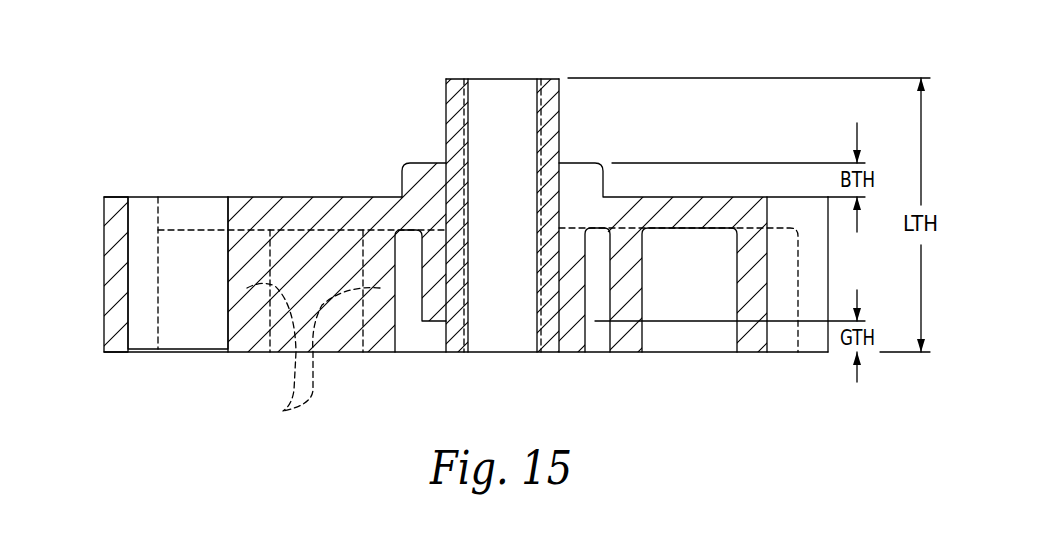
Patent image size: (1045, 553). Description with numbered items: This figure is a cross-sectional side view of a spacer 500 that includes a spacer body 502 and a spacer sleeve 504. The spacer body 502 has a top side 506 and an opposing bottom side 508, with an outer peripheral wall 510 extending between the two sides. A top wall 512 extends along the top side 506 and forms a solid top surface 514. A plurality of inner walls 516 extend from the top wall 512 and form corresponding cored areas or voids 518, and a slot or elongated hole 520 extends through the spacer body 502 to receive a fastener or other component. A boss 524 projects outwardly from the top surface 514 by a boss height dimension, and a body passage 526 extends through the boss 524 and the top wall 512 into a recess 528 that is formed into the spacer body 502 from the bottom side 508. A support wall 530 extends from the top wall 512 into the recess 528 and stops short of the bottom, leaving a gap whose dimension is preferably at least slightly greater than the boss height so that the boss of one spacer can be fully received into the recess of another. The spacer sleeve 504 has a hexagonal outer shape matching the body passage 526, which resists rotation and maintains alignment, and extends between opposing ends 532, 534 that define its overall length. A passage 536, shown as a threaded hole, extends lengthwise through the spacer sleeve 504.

The spacer 500 is at (152, 66).
The spacer body 502 is at (86, 278).
The spacer sleeve 504 is at (387, 72).
The top side 506 is at (106, 175).
The bottom side 508 is at (100, 378).
The outer peripheral wall 510 is at (812, 326).
The top wall 512 is at (698, 200).
The top surface 514 is at (265, 197).
The inner walls 516 is at (447, 329).
The cored areas or voids 518 is at (690, 335).
The slot or elongated hole 520 is at (205, 257).
The boss 524 is at (390, 157).
The body passage 526 is at (575, 225).
The recess 528 is at (408, 336).
The support wall 530 is at (575, 315).
The end of spacer sleeve 532 is at (485, 78).
The end of spacer sleeve 534 is at (457, 352).
The passage 536 is at (505, 155).